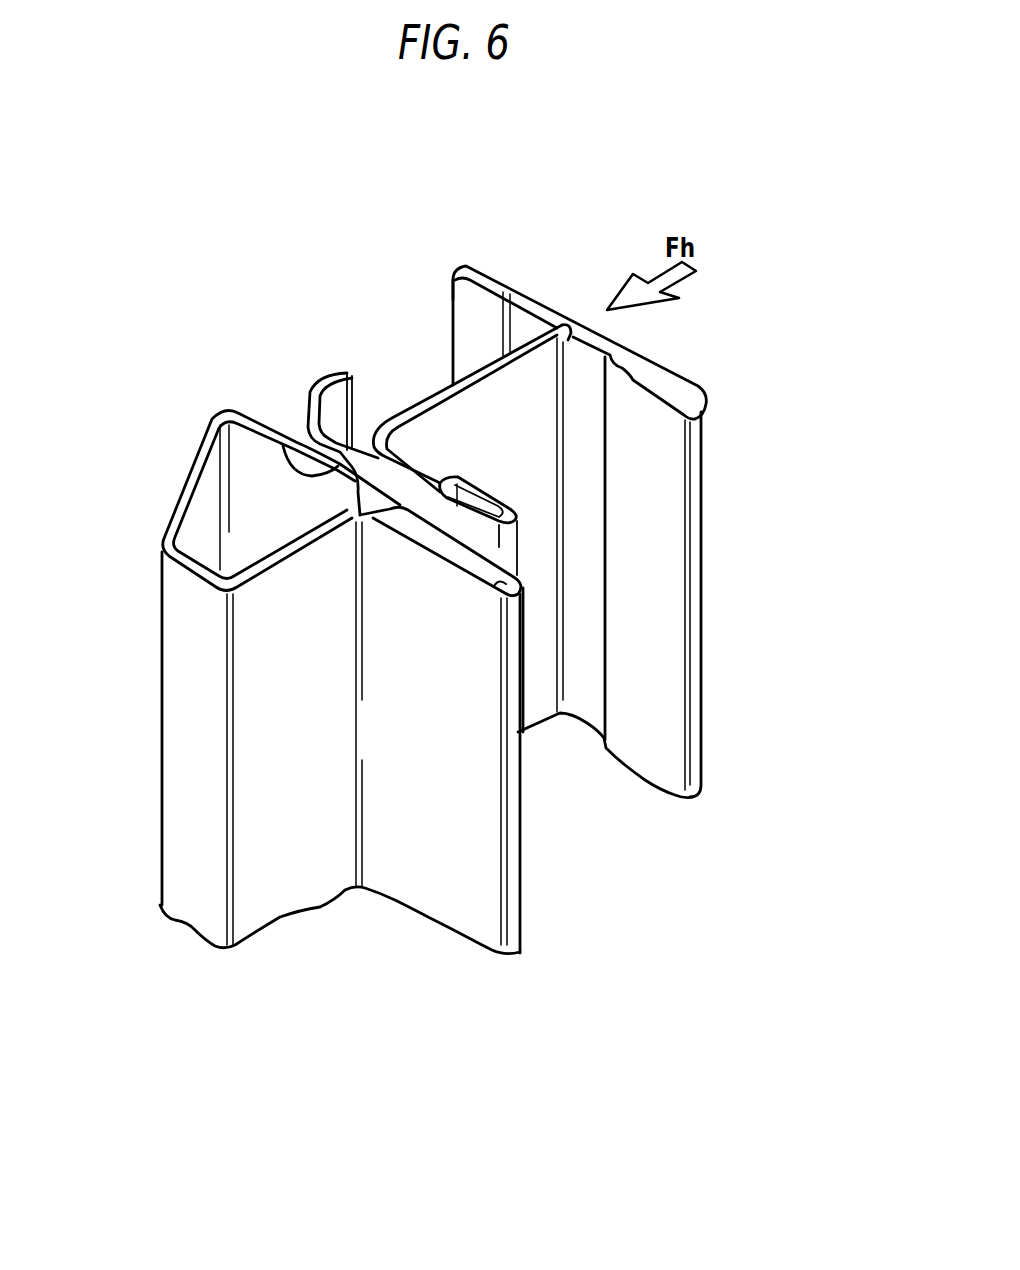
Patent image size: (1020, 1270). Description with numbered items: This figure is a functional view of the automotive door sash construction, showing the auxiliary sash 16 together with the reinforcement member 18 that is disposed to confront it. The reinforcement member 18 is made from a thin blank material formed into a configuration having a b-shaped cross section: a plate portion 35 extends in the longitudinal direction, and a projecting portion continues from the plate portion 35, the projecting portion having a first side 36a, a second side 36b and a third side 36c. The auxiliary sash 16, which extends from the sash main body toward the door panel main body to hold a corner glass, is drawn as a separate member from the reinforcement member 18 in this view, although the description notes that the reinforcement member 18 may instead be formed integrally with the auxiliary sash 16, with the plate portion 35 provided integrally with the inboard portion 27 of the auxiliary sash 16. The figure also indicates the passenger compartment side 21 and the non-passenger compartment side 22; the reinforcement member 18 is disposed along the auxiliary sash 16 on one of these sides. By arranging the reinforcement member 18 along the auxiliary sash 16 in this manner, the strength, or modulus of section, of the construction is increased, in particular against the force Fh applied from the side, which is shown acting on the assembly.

The auxiliary sash 16 is at (463, 233).
The reinforcement member 18 is at (176, 399).
The passenger compartment side 21 is at (265, 1011).
The non-passenger compartment side 22 is at (743, 774).
The inboard portion 27 is at (293, 450).
The plate portion 35 is at (466, 890).
The first side 36a is at (196, 692).
The second side 36b is at (178, 482).
The third side 36c is at (279, 847).